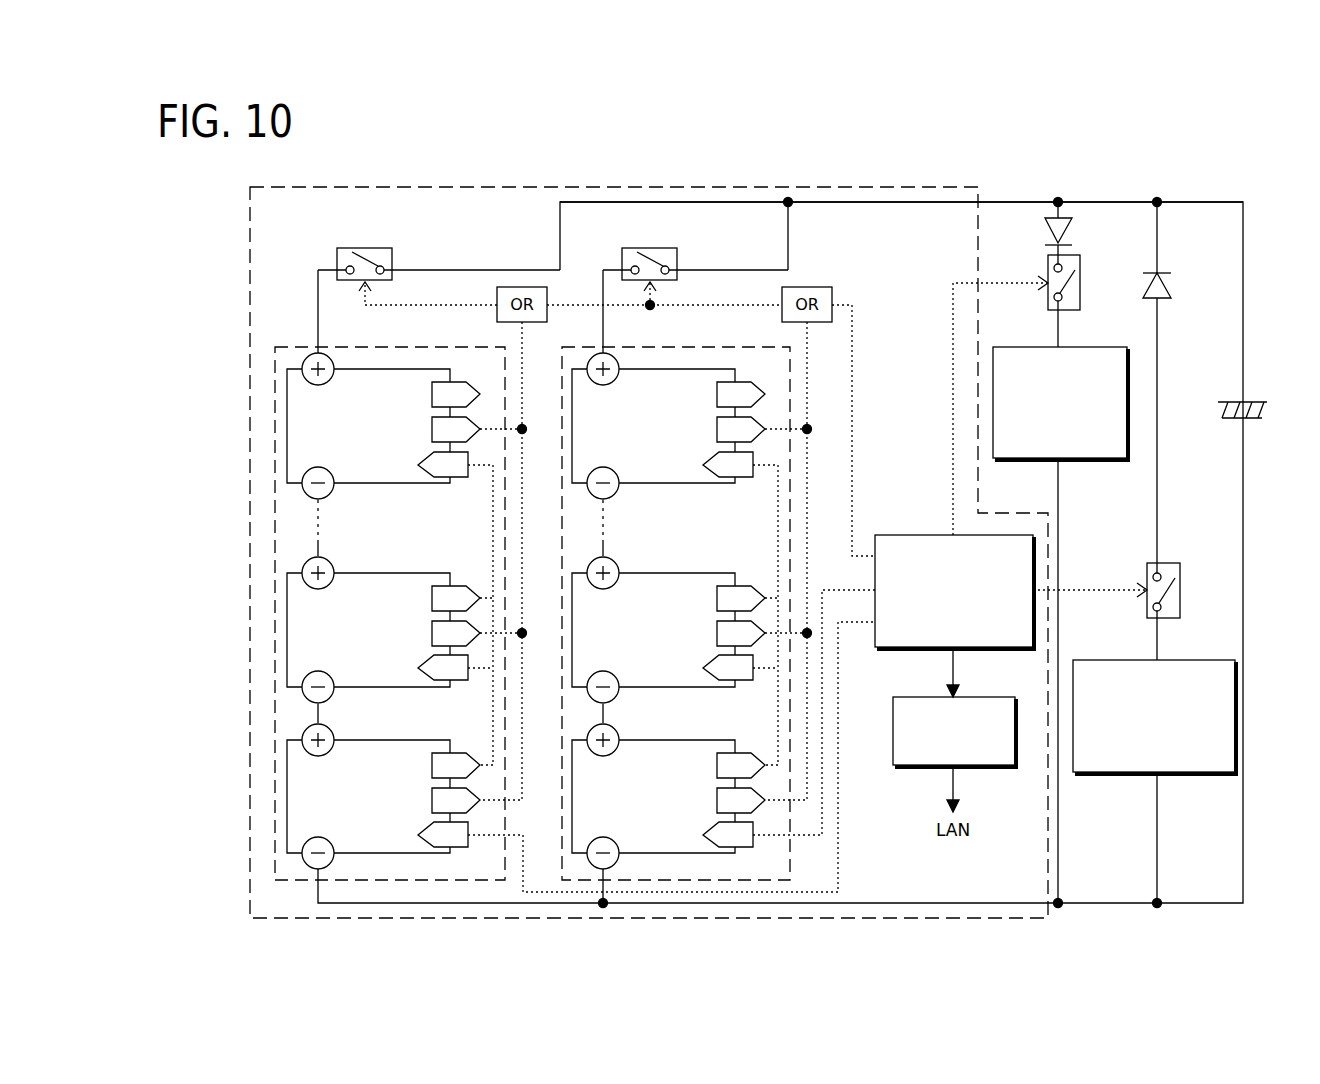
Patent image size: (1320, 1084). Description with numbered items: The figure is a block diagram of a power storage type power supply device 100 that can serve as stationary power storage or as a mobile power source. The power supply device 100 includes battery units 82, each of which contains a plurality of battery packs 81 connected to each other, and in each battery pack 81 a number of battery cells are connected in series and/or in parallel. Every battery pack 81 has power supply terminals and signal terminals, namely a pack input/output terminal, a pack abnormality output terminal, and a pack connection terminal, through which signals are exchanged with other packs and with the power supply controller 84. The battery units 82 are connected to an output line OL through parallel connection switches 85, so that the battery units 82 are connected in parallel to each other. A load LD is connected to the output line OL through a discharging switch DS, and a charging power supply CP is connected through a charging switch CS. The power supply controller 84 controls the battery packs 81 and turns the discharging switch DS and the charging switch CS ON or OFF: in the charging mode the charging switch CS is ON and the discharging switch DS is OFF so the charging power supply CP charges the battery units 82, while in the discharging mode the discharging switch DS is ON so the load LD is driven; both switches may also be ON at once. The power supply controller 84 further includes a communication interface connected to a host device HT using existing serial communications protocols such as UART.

The power supply device 100 is at (912, 187).
The battery unit 82 is at (423, 880).
The battery pack 81 is at (383, 483).
The parallel connection switch 85 is at (337, 262).
The power supply controller 84 is at (940, 535).
The output line OL is at (905, 202).
The discharging switch DS is at (1085, 290).
The load LD is at (1080, 458).
The charging switch CS is at (1183, 568).
The charging power supply CP is at (1180, 772).
The host device HT is at (967, 765).